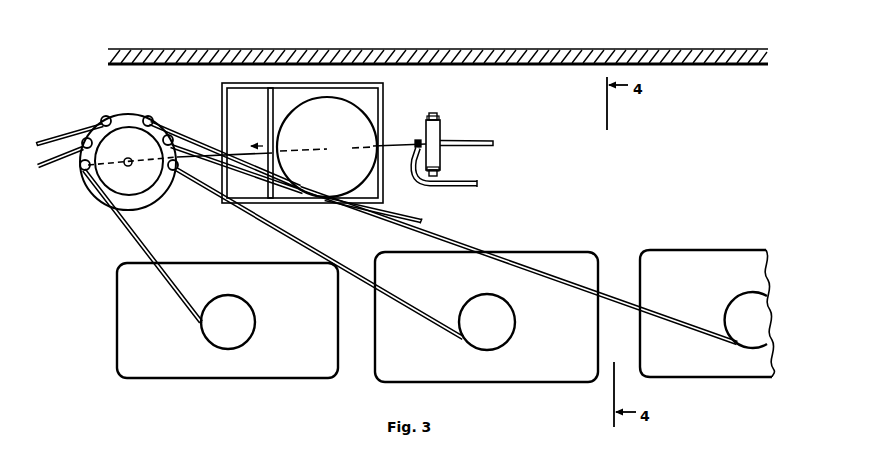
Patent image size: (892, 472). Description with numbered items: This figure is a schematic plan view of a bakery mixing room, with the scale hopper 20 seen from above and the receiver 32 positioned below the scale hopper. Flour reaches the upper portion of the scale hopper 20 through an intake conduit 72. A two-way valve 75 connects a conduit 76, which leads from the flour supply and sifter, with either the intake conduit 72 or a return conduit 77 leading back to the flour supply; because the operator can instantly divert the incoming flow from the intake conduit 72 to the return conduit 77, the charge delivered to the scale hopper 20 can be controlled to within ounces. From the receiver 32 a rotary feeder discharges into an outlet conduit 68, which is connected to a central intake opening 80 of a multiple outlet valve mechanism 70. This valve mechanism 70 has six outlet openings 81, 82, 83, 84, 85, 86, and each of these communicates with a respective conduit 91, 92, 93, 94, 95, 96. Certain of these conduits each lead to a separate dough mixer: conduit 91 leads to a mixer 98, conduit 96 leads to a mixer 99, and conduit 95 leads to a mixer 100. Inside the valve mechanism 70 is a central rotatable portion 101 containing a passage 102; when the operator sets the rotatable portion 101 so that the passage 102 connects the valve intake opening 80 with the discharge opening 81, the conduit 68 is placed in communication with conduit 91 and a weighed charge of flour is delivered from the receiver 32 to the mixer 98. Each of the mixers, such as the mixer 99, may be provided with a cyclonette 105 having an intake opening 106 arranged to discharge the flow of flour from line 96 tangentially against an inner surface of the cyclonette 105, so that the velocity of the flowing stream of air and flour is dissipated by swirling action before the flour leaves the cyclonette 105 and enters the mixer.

The scale hopper 20 is at (319, 128).
The receiver 32 is at (367, 184).
The outlet conduit 68 is at (240, 152).
The multiple outlet valve mechanism 70 is at (136, 112).
The intake conduit 72 is at (397, 143).
The valve 75 is at (441, 128).
The conduit 76 is at (470, 141).
The return conduit 77 is at (470, 188).
The central intake opening 80 is at (131, 166).
The outlet opening 81 is at (82, 172).
The outlet opening 82 is at (93, 144).
The outlet opening 83 is at (104, 117).
The outlet opening 84 is at (152, 118).
The outlet opening 85 is at (172, 137).
The outlet opening 86 is at (175, 170).
The conduit 91 is at (145, 249).
The conduit 92 is at (39, 168).
The conduit 93 is at (55, 138).
The conduit 94 is at (417, 218).
The conduit 95 is at (619, 299).
The conduit 96 is at (318, 250).
The mixer 98 is at (303, 367).
The mixer 99 is at (546, 370).
The mixer 100 is at (708, 371).
The central rotatable portion 101 is at (132, 197).
The passage 102 is at (104, 168).
The cyclonette 105 is at (259, 321).
The intake opening 106 is at (201, 330).